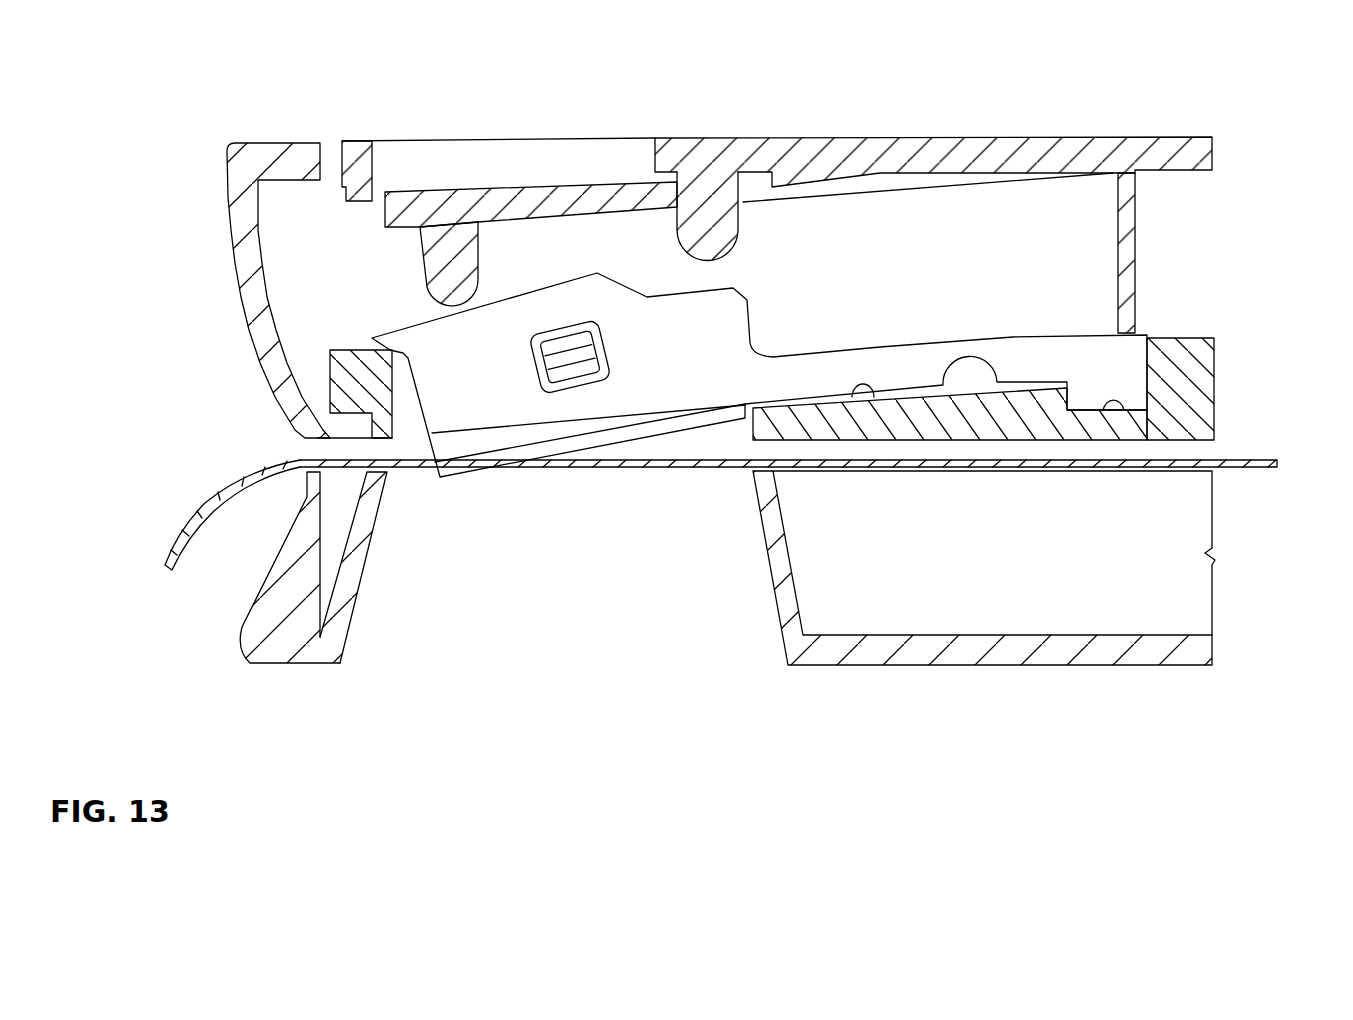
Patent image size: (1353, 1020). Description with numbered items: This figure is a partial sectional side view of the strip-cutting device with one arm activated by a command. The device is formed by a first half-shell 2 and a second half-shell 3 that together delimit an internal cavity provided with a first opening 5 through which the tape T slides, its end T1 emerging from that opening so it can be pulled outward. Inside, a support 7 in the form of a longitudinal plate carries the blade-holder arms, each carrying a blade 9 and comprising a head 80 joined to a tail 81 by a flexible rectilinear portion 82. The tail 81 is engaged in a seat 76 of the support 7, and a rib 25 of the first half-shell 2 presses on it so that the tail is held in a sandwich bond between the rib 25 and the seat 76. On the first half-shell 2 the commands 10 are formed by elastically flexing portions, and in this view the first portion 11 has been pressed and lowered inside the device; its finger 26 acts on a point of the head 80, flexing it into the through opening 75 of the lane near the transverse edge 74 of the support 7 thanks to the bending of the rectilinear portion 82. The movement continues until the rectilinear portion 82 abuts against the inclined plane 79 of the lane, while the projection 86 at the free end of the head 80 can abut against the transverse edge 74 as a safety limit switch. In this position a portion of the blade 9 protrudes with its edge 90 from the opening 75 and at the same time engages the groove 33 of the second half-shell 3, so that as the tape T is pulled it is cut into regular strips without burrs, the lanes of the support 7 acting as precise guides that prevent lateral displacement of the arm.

The first half-shell 2 is at (1117, 120).
The second half-shell 3 is at (1060, 665).
The first opening 5 is at (295, 445).
The support 7 is at (1173, 443).
The blade 9 is at (445, 450).
The commands 10 is at (482, 192).
The first portion 11 is at (537, 193).
The rib 25 is at (1137, 257).
The finger 26 is at (443, 252).
The groove 33 is at (495, 640).
The transverse edge 74 is at (370, 350).
The through opening 75 is at (647, 443).
The seat 76 is at (1112, 408).
The inclined plane 79 is at (885, 395).
The head 80 is at (542, 282).
The tail 81 is at (1132, 352).
The rectilinear portion 82 is at (908, 320).
The projection 86 is at (383, 350).
The edge 90 is at (452, 468).
The tape T is at (1262, 458).
The tape end T1 is at (195, 520).